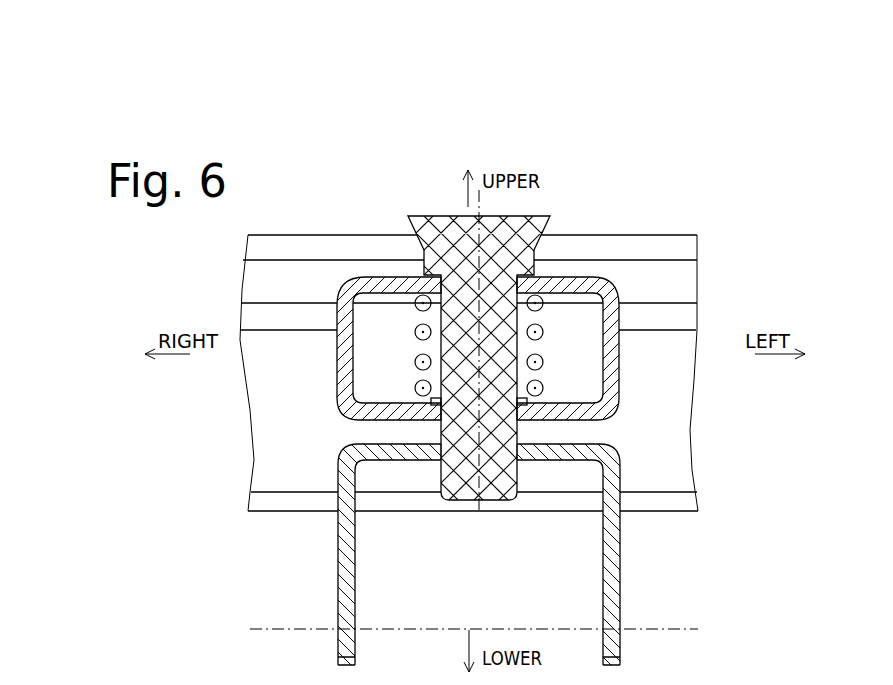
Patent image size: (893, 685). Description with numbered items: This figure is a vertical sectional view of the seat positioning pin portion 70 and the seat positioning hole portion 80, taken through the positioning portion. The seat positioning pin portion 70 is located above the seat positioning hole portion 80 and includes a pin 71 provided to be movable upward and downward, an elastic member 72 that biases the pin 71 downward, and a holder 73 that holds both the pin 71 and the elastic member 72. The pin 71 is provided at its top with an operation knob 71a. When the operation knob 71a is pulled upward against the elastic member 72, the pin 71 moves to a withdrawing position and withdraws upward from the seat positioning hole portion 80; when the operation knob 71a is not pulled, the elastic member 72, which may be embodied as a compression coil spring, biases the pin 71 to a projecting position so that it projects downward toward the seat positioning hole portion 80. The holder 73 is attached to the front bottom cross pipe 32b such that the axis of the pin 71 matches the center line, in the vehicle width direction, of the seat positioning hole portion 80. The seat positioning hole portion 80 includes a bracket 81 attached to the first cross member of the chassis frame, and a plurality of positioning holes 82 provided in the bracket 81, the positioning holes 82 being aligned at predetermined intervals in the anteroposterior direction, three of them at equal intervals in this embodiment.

The front bottom cross pipe 32b is at (340, 234).
The seat positioning pin portion 70 is at (478, 339).
The pin 71 is at (478, 339).
The operation knob 71a is at (546, 217).
The elastic member 72 is at (548, 331).
The holder 73 is at (620, 321).
The seat positioning hole portion 80 is at (474, 554).
The bracket 81 is at (620, 530).
The positioning holes 82 is at (500, 455).